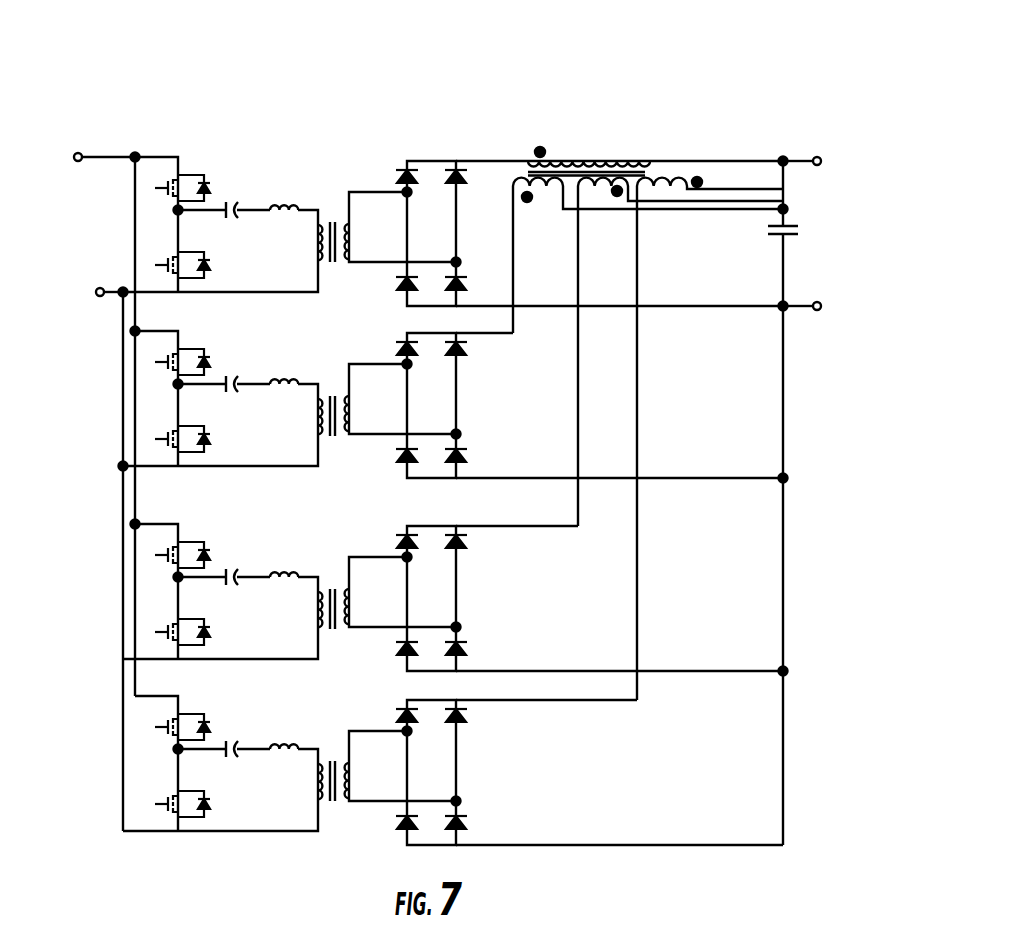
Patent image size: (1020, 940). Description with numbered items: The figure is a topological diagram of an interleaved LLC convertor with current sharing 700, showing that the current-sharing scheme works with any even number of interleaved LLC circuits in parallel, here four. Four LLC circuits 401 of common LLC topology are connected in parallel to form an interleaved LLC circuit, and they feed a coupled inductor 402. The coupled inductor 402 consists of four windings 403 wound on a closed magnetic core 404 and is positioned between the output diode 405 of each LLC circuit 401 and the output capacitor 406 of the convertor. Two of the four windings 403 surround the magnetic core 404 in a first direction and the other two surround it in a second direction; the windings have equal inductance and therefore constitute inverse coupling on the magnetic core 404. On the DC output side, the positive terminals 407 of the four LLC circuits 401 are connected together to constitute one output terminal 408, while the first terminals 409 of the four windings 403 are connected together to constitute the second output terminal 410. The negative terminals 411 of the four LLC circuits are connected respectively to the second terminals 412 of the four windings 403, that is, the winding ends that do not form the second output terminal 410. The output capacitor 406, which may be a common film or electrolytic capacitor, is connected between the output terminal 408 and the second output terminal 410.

The interleaved LLC convertor with current sharing 700 is at (797, 127).
The LLC circuit 401 is at (78, 470).
The coupled inductor 402 is at (512, 183).
The winding 403 is at (573, 163).
The magnetic core 404 is at (647, 165).
The output diode 405 is at (446, 208).
The output capacitor 406 is at (820, 247).
The positive terminal 407 is at (400, 516).
The output terminal 408 is at (818, 305).
The first terminal 409 is at (737, 161).
The second output terminal 410 is at (818, 161).
The negative terminal 411 is at (407, 161).
The second terminal 412 is at (508, 163).